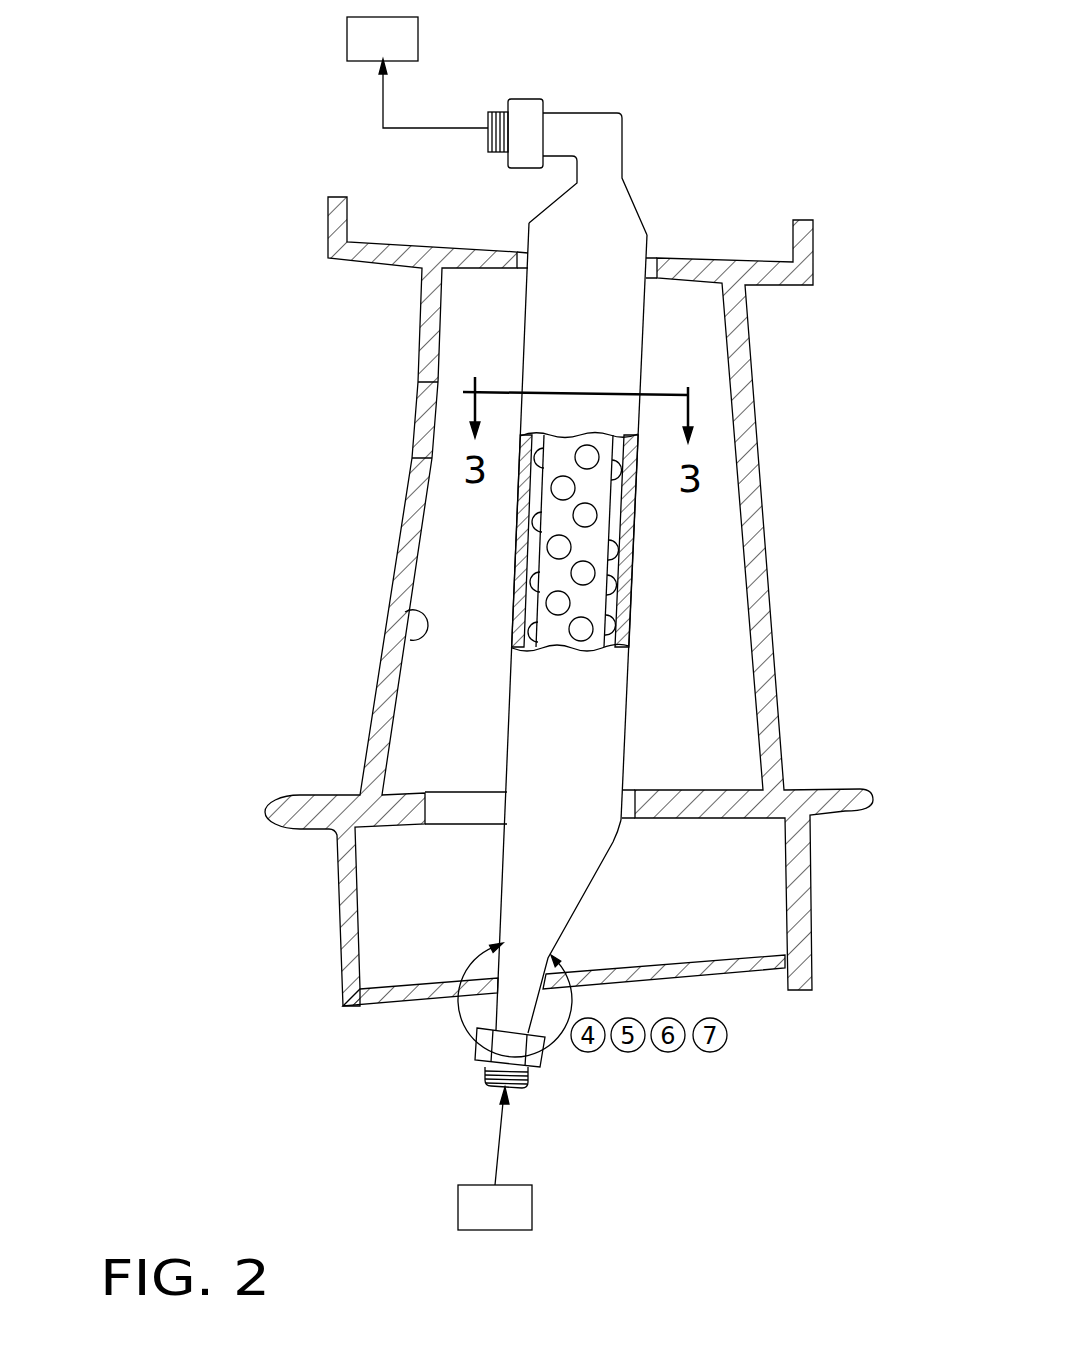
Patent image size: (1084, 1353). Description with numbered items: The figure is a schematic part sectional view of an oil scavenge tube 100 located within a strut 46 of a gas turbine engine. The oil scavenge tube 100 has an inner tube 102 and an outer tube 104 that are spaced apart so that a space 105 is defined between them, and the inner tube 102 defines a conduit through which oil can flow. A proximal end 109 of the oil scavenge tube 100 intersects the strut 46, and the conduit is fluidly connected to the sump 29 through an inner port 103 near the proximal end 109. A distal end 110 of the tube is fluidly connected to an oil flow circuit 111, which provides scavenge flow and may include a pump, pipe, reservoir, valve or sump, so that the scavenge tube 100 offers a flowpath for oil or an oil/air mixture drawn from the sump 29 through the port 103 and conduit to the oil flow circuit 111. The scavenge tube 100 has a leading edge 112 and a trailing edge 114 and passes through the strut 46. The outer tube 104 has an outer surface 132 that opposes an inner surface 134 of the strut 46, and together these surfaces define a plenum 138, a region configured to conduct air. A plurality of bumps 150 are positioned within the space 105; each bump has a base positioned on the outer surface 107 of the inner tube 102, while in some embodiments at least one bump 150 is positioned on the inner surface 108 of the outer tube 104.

The oil scavenge tube 100 is at (712, 115).
The inner tube 102 is at (598, 493).
The inner port 103 is at (495, 1088).
The outer tube 104 is at (632, 540).
The space 105 is at (538, 542).
The outer surface of the inner tube 107 is at (597, 612).
The inner surface of the outer tube 108 is at (605, 588).
The proximal end 109 is at (507, 867).
The distal end 110 is at (603, 113).
The oil flow circuit 111 is at (397, 36).
The leading edge 112 is at (510, 707).
The trailing edge 114 is at (626, 701).
The outer surface 132 is at (593, 774).
The inner surface 134 is at (413, 637).
The plenum 138 is at (470, 749).
The bumps 150 is at (565, 608).
The sump 29 is at (513, 1222).
The strut 46 is at (812, 893).